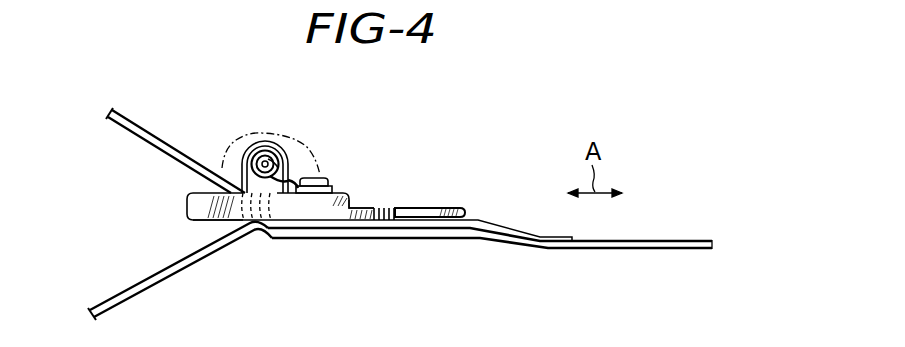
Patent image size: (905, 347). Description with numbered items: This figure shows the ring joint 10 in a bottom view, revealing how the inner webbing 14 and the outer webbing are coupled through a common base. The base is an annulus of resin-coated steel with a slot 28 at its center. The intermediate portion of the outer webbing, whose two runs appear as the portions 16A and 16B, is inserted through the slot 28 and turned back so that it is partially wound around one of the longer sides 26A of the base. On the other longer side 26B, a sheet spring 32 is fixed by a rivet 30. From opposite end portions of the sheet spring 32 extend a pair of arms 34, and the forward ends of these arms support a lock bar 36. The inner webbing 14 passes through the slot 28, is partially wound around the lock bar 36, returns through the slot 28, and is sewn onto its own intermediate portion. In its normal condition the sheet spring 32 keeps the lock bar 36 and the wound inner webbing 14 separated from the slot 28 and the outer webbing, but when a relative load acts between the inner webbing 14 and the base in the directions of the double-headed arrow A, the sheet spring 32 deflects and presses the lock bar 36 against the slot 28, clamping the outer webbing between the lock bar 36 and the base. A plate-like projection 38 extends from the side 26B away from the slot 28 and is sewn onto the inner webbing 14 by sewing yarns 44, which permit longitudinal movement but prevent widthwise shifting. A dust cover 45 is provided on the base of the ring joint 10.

The ring joint 10 is at (380, 190).
The inner webbing 14 is at (522, 243).
The first lead wire 16A is at (158, 136).
The second lead wire 16B is at (187, 262).
The longer side of the base 26A is at (195, 214).
The other longer side of the base 26B is at (328, 213).
The slot 28 is at (252, 230).
The rivet 30 is at (327, 181).
The sheet spring 32 is at (340, 188).
The arms 34 is at (276, 152).
The lock bar 36 is at (264, 152).
The plate-like projection 38 is at (447, 208).
The sewing yarns 44 is at (410, 213).
The dust cover 45 is at (236, 142).